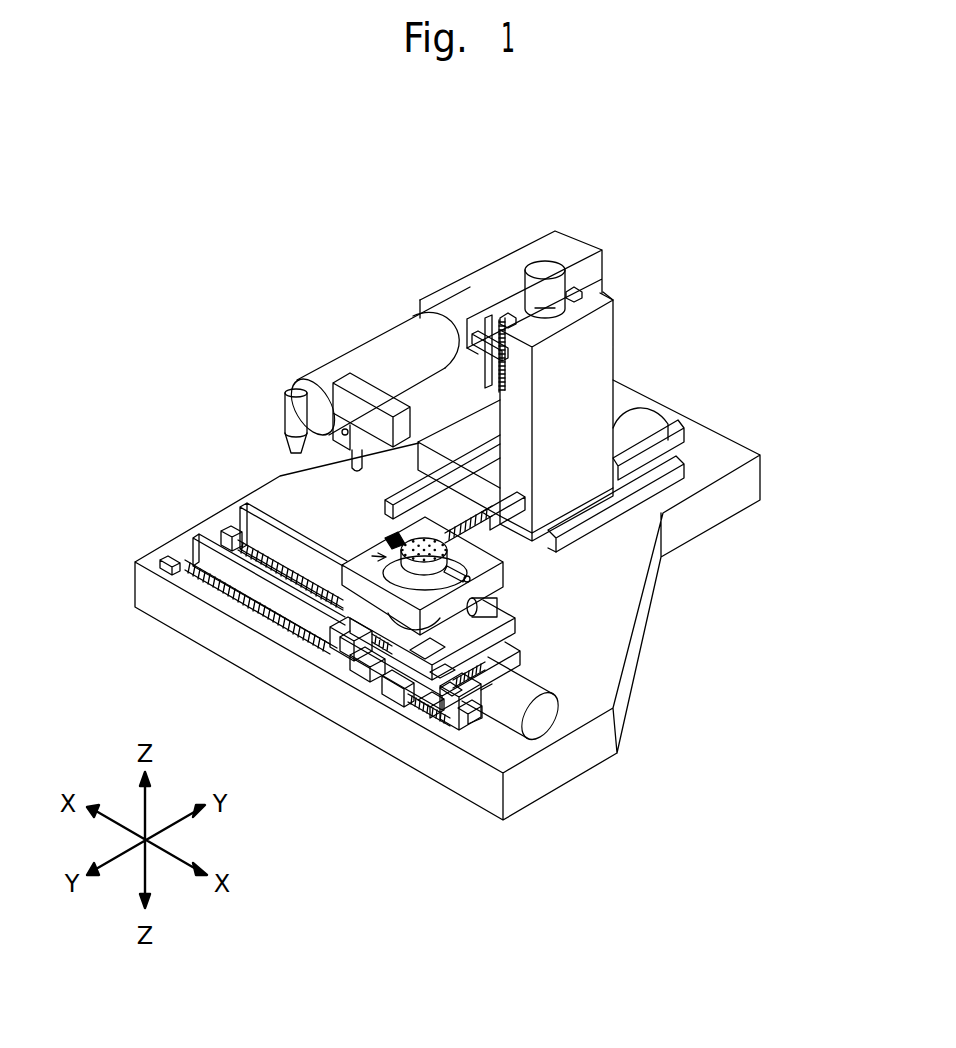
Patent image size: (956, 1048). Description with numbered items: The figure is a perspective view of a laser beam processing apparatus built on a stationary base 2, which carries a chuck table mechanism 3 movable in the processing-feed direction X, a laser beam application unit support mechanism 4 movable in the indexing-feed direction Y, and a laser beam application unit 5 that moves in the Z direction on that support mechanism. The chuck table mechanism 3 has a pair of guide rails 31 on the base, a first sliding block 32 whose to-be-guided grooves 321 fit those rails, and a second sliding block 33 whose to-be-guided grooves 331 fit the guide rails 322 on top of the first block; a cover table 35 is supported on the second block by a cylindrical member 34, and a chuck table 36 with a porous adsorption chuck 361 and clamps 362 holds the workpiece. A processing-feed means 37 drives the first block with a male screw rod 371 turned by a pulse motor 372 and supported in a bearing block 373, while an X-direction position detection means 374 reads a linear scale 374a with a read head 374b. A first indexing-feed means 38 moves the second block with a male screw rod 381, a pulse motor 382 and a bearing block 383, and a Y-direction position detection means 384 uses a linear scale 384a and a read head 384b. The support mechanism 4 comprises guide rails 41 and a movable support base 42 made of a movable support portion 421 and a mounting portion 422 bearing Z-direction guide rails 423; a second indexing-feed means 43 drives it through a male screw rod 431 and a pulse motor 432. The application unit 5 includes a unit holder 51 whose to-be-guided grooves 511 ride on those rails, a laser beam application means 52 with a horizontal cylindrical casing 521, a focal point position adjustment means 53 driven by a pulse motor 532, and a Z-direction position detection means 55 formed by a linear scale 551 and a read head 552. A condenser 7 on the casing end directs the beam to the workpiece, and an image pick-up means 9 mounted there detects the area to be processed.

The stationary base 2 is at (707, 618).
The chuck table mechanism 3 is at (596, 662).
The laser beam application unit support mechanism 4 is at (708, 466).
The laser beam application unit 5 is at (301, 312).
The condenser 7 is at (285, 422).
The image pick-up means 9 is at (352, 462).
The guide rails 31 is at (200, 540).
The first sliding block 32 is at (420, 702).
The second sliding block 33 is at (522, 660).
The cylindrical member 34 is at (436, 728).
The cover table 35 is at (503, 584).
The chuck table 36 is at (372, 556).
The processing-feed means 37 is at (474, 733).
The first indexing-feed means 38 is at (508, 610).
The guide rails 41 is at (655, 487).
The movable support base 42 is at (622, 370).
The second indexing-feed means 43 is at (681, 436).
The unit holder 51 is at (522, 254).
The laser beam application means 52 is at (350, 347).
The focal point position adjustment means 53 is at (547, 255).
The Z-direction position detection means 55 is at (522, 356).
The to-be-guided grooves 321 is at (405, 700).
The guide rails 322 is at (430, 680).
The to-be-guided grooves 331 is at (420, 700).
The adsorption chuck 361 is at (470, 570).
The clamps 362 is at (390, 542).
The male screw rod 371 is at (248, 582).
The pulse motor 372 is at (548, 732).
The bearing block 373 is at (228, 528).
The X-direction position detection means 374 is at (432, 708).
The linear scale 374a is at (160, 570).
The read head 374b is at (396, 700).
The male screw rod 381 is at (470, 610).
The pulse motor 382 is at (516, 602).
The bearing block 383 is at (470, 640).
The Y-direction position detection means 384 is at (500, 716).
The linear scale 384a is at (480, 722).
The read head 384b is at (560, 652).
The movable support portion 421 is at (440, 440).
The mounting portion 422 is at (615, 335).
The guide rails 423 is at (576, 292).
The male screw rod 431 is at (470, 520).
The pulse motor 432 is at (645, 412).
The to-be-guided grooves 511 is at (478, 318).
The cylindrical casing 521 is at (330, 372).
The pulse motor 532 is at (552, 285).
The linear scale 551 is at (504, 355).
The read head 552 is at (508, 348).